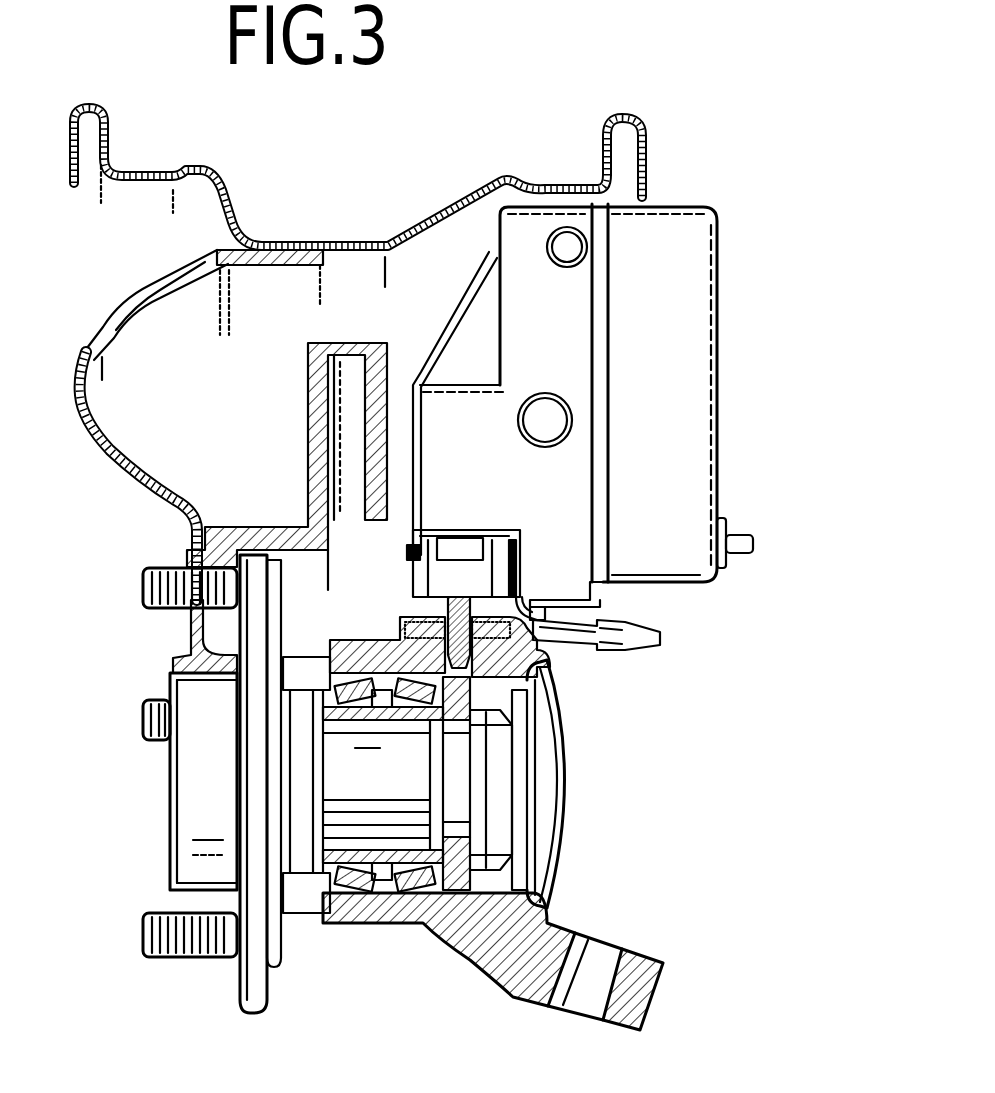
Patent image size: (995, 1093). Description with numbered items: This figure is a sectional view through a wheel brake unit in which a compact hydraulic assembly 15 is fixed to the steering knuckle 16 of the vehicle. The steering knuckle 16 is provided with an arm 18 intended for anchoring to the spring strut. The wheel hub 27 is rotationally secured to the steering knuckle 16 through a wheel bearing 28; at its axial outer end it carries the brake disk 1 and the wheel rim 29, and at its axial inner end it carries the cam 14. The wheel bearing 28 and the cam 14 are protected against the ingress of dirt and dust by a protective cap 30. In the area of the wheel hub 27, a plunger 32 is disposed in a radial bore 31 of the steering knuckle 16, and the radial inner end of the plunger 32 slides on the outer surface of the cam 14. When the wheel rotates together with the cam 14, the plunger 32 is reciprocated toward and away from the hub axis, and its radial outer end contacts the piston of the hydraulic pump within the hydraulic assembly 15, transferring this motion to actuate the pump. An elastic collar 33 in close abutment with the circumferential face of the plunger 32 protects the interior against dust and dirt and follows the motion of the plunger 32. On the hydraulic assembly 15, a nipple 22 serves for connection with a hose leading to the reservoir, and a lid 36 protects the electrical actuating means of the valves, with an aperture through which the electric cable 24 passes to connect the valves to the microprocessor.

The brake disk 1 is at (320, 393).
The cam 14 is at (557, 710).
The hydraulic assembly 15 is at (738, 241).
The steering knuckle 16 is at (533, 647).
The arm 18 is at (640, 975).
The nipple 22 is at (660, 636).
The electric cable 24 is at (735, 542).
The wheel hub 27 is at (340, 817).
The wheel bearing 28 is at (383, 867).
The wheel rim 29 is at (85, 395).
The protective cap 30 is at (570, 757).
The radial bore 31 is at (513, 598).
The plunger 32 is at (415, 622).
The elastic collar 33 is at (442, 612).
The lid 36 is at (692, 297).